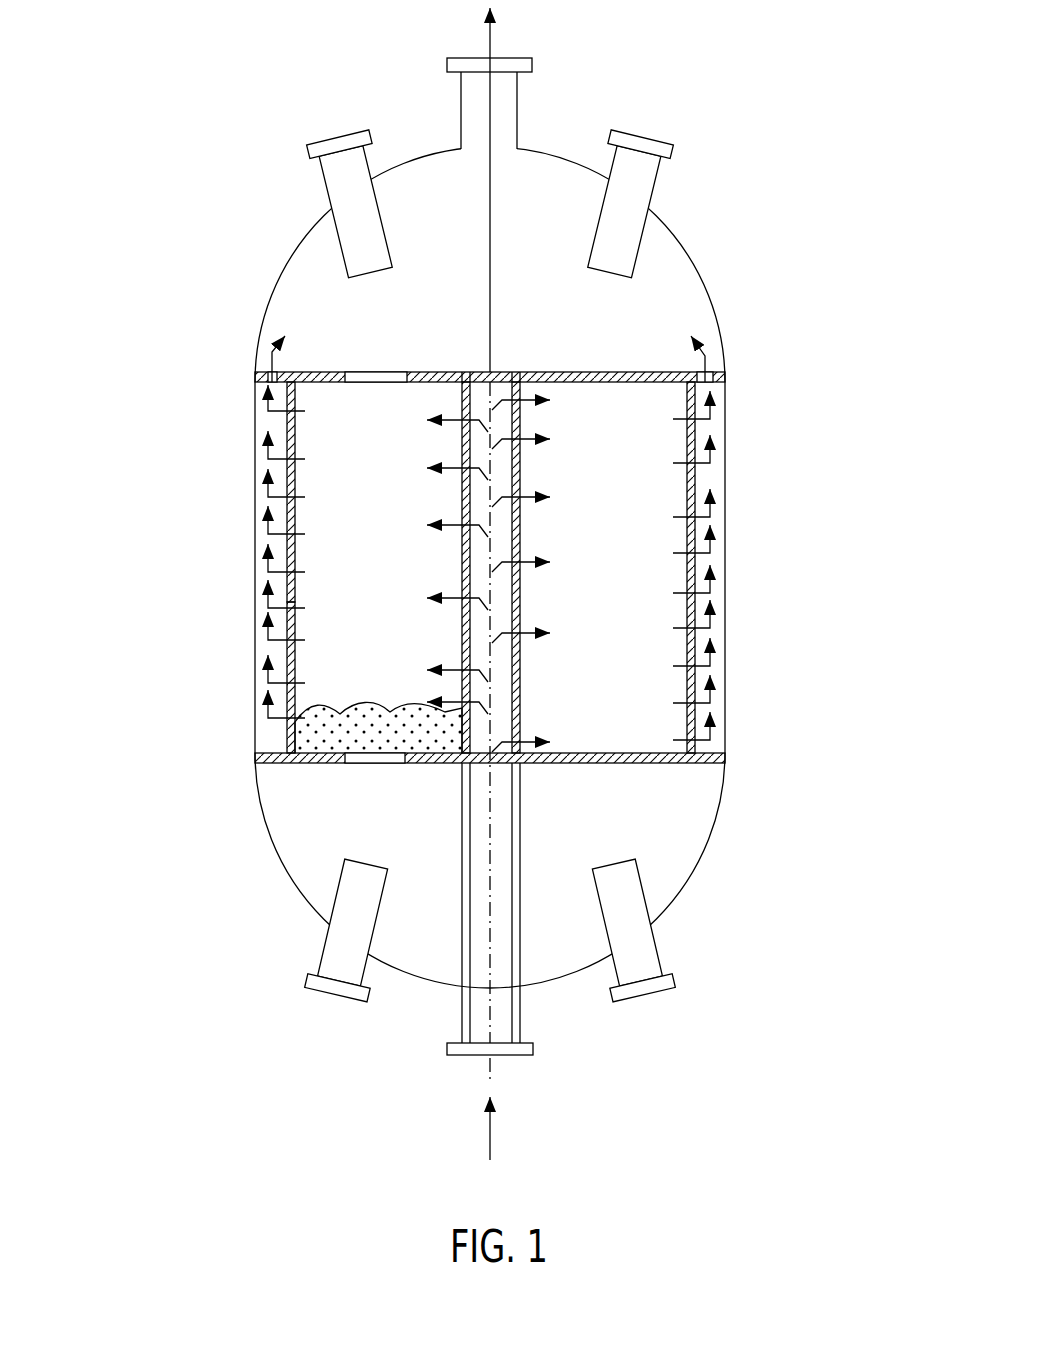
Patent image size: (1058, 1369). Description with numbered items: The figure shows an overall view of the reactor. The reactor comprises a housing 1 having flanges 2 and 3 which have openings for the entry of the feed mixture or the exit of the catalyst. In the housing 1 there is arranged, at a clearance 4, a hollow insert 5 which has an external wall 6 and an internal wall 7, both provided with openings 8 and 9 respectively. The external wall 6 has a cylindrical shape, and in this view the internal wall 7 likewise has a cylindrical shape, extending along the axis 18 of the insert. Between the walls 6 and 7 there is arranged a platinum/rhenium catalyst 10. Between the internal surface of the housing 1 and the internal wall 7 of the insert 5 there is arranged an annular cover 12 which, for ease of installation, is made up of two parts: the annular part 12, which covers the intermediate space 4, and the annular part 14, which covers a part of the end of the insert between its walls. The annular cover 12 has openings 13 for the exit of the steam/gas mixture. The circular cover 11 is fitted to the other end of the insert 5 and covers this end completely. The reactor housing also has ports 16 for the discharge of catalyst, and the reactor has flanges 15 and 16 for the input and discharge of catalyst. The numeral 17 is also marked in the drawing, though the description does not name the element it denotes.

The housing 1 is at (555, 450).
The flange 2 is at (448, 1101).
The flange 3 is at (536, 186).
The clearance 4 is at (487, 567).
The hollow insert 5 is at (483, 555).
The external wall 6 is at (212, 492).
The internal wall 7 is at (632, 727).
The openings 8 is at (212, 677).
The openings 9 is at (665, 576).
The platinum/rhenium catalyst 10 is at (290, 786).
The circular cover 11 is at (492, 783).
The annular cover 12 is at (522, 326).
The openings 13 is at (769, 325).
The annular part 14 is at (452, 292).
The flange 15 is at (507, 174).
The ports 16 is at (506, 949).
The lower head space 17 is at (554, 870).
The axis 18 is at (591, 935).